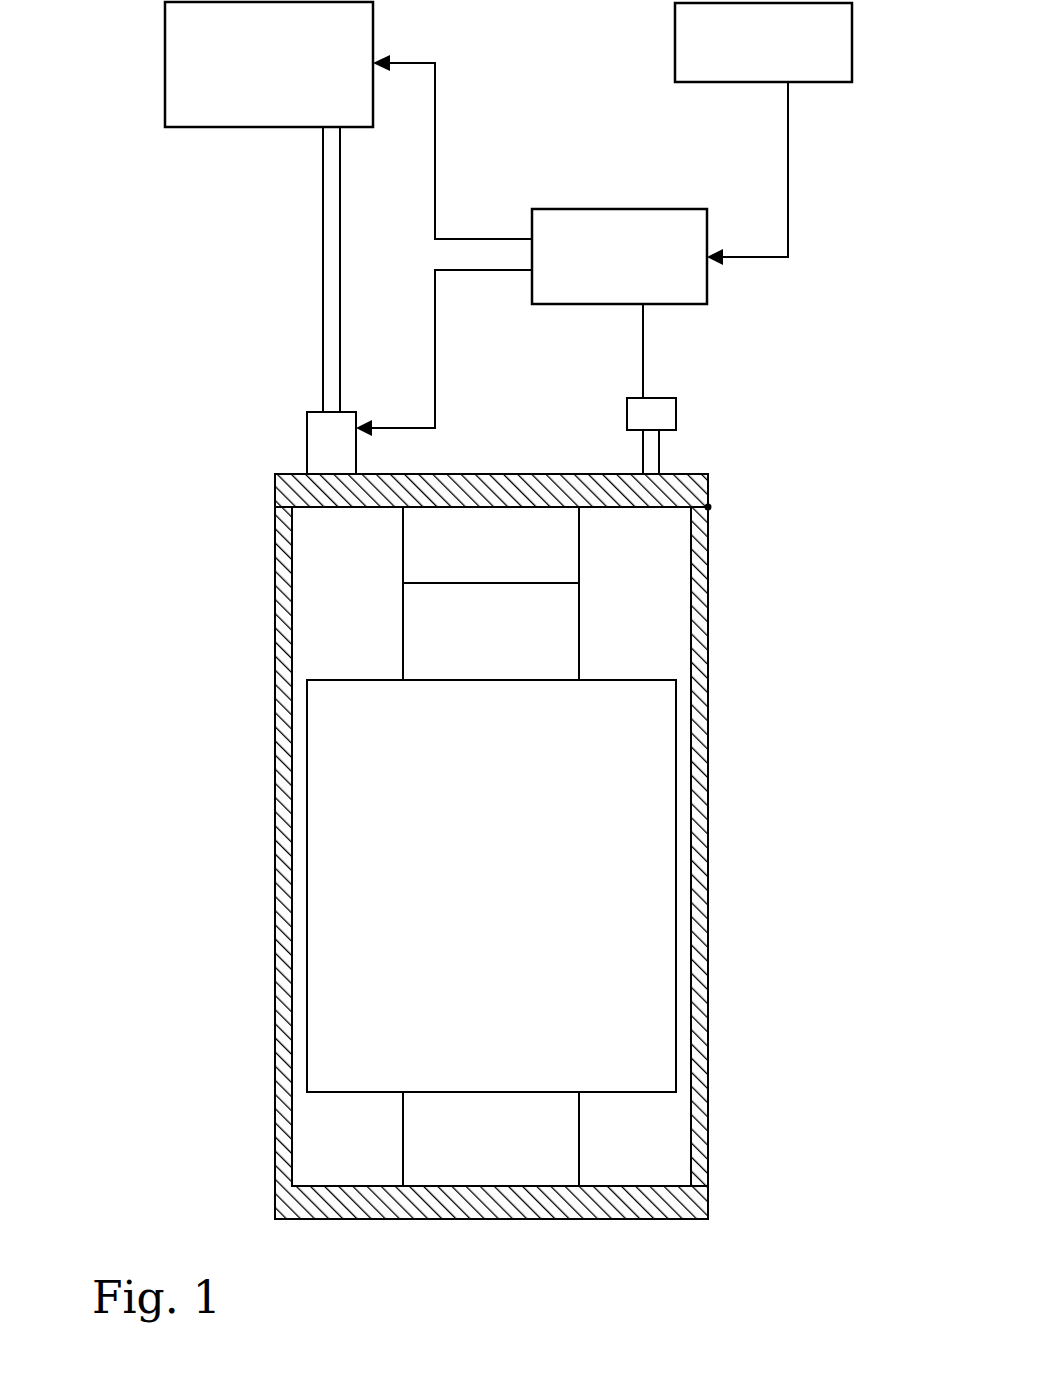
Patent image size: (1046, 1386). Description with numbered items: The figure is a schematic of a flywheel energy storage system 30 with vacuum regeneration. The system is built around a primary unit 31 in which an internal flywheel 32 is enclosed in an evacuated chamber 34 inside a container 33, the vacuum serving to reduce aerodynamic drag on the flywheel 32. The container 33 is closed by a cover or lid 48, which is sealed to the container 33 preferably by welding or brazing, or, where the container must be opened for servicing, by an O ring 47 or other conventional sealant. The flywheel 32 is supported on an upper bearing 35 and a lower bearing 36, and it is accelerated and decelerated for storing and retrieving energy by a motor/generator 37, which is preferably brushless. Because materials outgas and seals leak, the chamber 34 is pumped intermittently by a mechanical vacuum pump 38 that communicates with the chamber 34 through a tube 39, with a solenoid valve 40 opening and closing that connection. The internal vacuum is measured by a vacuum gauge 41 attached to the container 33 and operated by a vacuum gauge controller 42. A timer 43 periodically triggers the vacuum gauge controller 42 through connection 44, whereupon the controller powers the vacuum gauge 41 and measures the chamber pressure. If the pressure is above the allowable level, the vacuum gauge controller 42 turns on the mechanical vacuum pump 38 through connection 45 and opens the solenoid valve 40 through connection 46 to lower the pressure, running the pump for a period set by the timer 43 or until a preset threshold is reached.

The flywheel energy storage system 30 is at (128, 285).
The primary unit 31 is at (736, 645).
The flywheel 32 is at (677, 785).
The container 33 is at (707, 877).
The evacuated chamber 34 is at (666, 1139).
The upper bearing 35 is at (579, 628).
The lower bearing 36 is at (403, 1150).
The motor/generator 37 is at (579, 546).
The mechanical vacuum pump 38 is at (165, 63).
The tube 39 is at (323, 250).
The solenoid valve 40 is at (307, 437).
The vacuum gauge 41 is at (676, 414).
The vacuum gauge controller 42 is at (622, 209).
The timer 43 is at (855, 50).
The connection 44 is at (790, 198).
The connection 45 is at (438, 141).
The connection 46 is at (437, 376).
The O ring 47 is at (708, 507).
The lid 48 is at (513, 475).